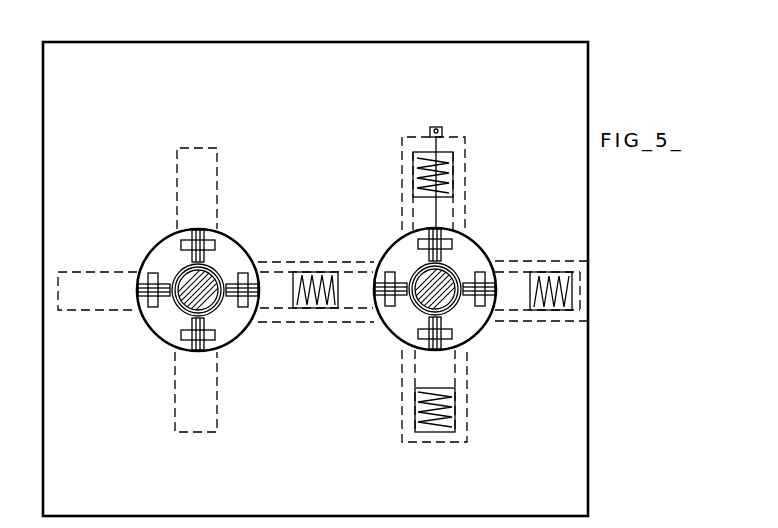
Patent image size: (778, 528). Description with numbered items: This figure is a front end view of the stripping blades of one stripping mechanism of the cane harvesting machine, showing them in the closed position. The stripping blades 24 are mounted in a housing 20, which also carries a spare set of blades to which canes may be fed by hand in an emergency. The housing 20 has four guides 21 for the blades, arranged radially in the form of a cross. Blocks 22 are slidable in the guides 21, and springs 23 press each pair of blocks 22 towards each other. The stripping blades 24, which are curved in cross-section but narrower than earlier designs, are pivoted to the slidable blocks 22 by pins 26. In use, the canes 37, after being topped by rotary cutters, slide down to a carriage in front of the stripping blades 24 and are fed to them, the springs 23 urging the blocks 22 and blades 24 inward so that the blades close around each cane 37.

The housing 20 is at (350, 65).
The guides 21 is at (332, 262).
The blocks 22 is at (465, 215).
The springs 23 is at (455, 142).
The stripping blades 24 is at (188, 300).
The pins 26 is at (484, 302).
The canes 37 is at (147, 340).